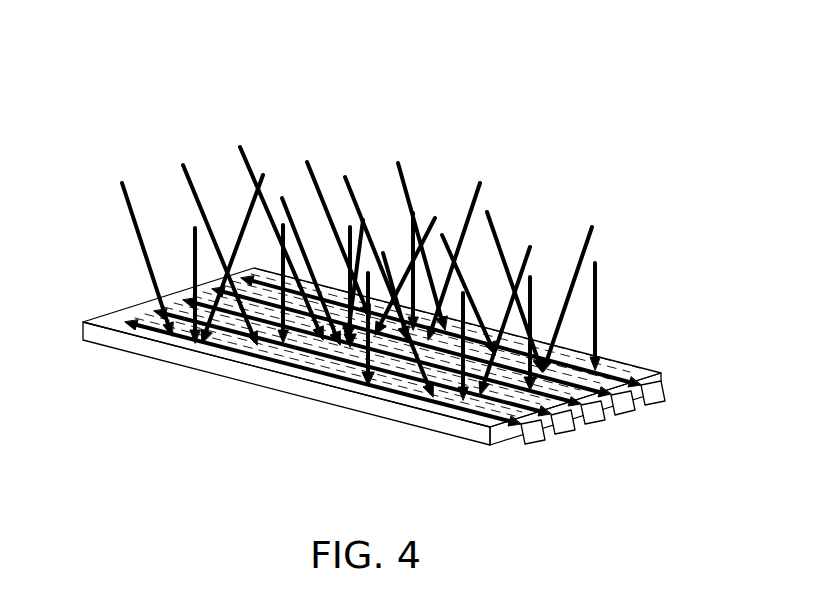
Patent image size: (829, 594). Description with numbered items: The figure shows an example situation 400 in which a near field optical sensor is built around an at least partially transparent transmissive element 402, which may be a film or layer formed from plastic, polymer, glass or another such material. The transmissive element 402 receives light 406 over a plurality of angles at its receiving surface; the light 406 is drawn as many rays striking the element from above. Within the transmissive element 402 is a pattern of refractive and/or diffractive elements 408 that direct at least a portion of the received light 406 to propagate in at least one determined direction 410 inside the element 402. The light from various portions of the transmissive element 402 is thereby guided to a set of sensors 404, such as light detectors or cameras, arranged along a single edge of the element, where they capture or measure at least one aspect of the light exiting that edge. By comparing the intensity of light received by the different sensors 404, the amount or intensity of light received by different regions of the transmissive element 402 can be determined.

The example situation 400 is at (777, 117).
The transmissive element 402 is at (83, 325).
The sensors 404 is at (549, 445).
The light 406 is at (143, 248).
The refractive and/or diffractive elements 408 is at (292, 375).
The determined direction 410 is at (127, 324).